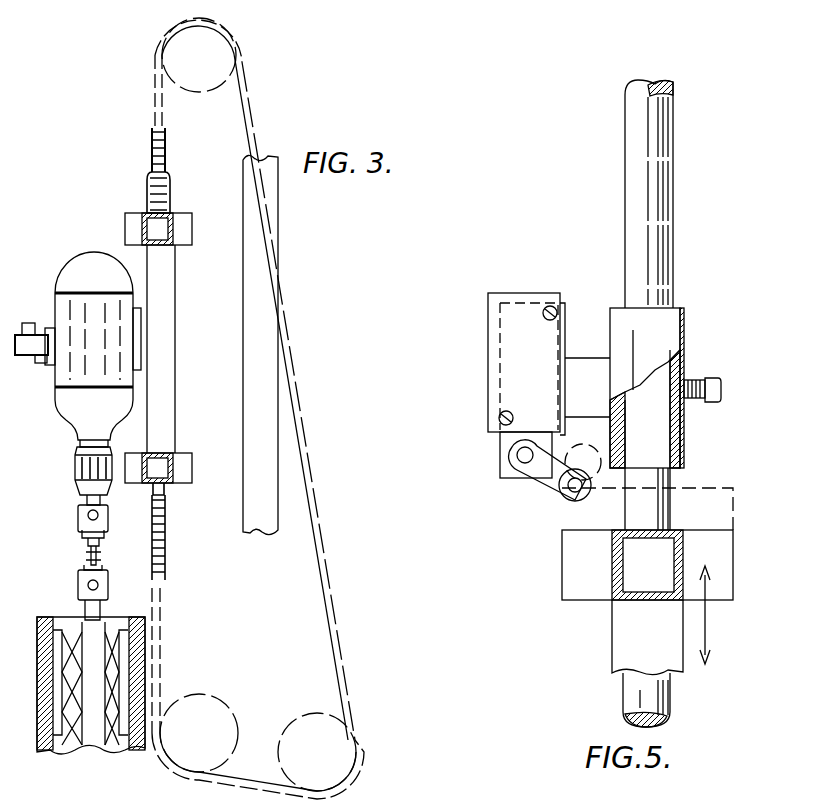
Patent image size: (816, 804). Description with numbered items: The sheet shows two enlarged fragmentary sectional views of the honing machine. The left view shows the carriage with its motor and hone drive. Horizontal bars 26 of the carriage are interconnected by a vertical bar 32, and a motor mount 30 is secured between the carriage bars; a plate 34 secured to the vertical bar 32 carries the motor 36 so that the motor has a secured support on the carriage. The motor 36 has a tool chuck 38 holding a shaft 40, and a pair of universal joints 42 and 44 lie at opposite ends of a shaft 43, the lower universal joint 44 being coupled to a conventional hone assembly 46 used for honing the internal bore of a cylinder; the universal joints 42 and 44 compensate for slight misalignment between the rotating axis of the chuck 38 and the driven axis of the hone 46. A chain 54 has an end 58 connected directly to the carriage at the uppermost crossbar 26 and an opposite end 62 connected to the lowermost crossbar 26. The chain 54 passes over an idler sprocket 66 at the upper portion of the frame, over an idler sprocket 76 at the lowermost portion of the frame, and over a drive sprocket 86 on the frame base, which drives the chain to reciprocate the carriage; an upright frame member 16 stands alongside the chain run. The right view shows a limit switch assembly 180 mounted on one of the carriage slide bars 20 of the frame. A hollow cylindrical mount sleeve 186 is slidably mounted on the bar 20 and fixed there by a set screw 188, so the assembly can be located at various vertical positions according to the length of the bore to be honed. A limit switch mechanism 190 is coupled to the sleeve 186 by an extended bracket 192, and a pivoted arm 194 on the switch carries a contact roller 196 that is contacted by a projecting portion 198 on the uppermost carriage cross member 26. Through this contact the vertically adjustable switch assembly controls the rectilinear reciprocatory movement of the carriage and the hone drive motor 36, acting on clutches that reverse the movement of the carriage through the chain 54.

In FIG. 3, the upright guide bar 16 is at (262, 361).
In FIG. 5, the vertical bar 20 is at (665, 277).
In FIG. 3, the horizontal bar 26 is at (140, 213).
In FIG. 5, the horizontal bar 26 is at (686, 552).
In FIG. 3, the motor mount 30 is at (42, 330).
In FIG. 3, the vertical bar 32 is at (142, 275).
In FIG. 3, the plate 34 is at (138, 338).
In FIG. 3, the motor 36 is at (85, 298).
In FIG. 3, the tool chuck 38 is at (76, 458).
In FIG. 3, the shaft 40 is at (76, 477).
In FIG. 3, the universal joint 42 is at (80, 512).
In FIG. 3, the shaft 43 is at (100, 556).
In FIG. 3, the universal joint 44 is at (78, 570).
In FIG. 3, the hone assembly 46 is at (45, 650).
In FIG. 3, the chain 54 is at (166, 156).
In FIG. 3, the end of chain 58 is at (172, 200).
In FIG. 3, the opposite end of chain 62 is at (166, 497).
In FIG. 3, the idler sprocket 66 is at (232, 95).
In FIG. 3, the idler sprocket 76 is at (222, 712).
In FIG. 3, the drive sprocket 86 is at (340, 737).
In FIG. 5, the limit switch assembly 180 is at (541, 278).
In FIG. 5, the mount sleeve 186 is at (684, 330).
In FIG. 5, the set screw 188 is at (697, 400).
In FIG. 5, the limit switch mechanism 190 is at (522, 375).
In FIG. 5, the extended bracket 192 is at (582, 368).
In FIG. 5, the pivoted arm 194 is at (540, 478).
In FIG. 5, the contact roller 196 is at (570, 503).
In FIG. 5, the projecting portion 198 is at (582, 540).